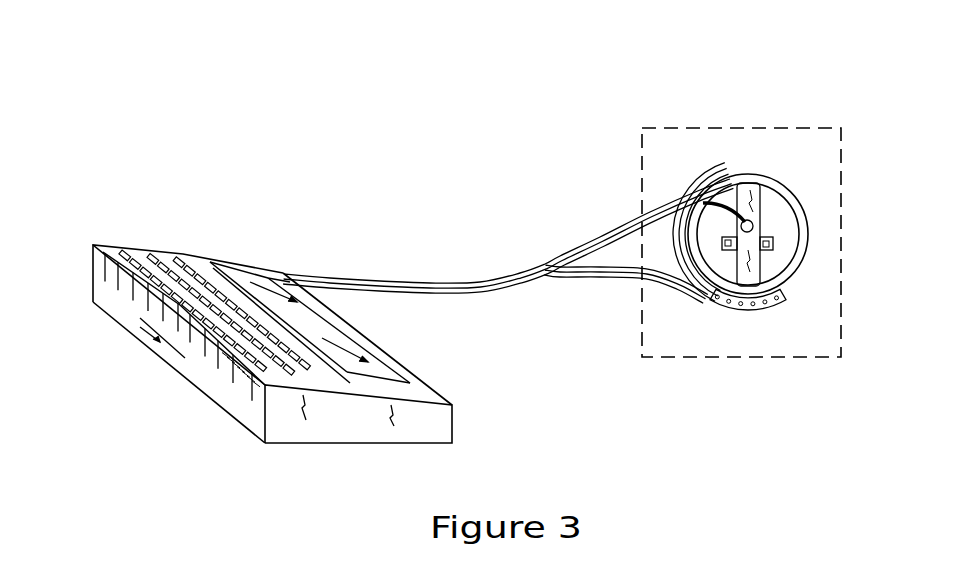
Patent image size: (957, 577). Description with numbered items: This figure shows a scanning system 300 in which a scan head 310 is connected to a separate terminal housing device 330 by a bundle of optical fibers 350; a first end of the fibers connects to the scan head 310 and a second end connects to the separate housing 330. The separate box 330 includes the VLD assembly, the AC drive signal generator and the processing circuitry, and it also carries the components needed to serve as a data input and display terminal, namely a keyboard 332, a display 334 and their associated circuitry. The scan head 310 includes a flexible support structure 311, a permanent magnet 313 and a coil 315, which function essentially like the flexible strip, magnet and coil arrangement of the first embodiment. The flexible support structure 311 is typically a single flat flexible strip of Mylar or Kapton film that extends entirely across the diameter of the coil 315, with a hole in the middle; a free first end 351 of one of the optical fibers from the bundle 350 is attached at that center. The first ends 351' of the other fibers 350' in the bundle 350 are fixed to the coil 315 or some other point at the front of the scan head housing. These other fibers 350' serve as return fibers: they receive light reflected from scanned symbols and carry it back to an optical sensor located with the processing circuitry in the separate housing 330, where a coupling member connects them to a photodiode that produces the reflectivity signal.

The scanning system 300 is at (301, 225).
The scan head 310 is at (741, 182).
The flexible support structure 311 is at (755, 198).
The permanent magnet 313 is at (773, 245).
The coil 315 is at (763, 178).
The separate terminal housing device 330 is at (272, 286).
The keyboard 332 is at (152, 270).
The display 334 is at (277, 298).
The bundle of optical fibers 350 is at (508, 232).
The return fibers 350' is at (626, 307).
The free first end of optical fiber 351 is at (707, 149).
The first ends of return fibers 351' is at (771, 343).